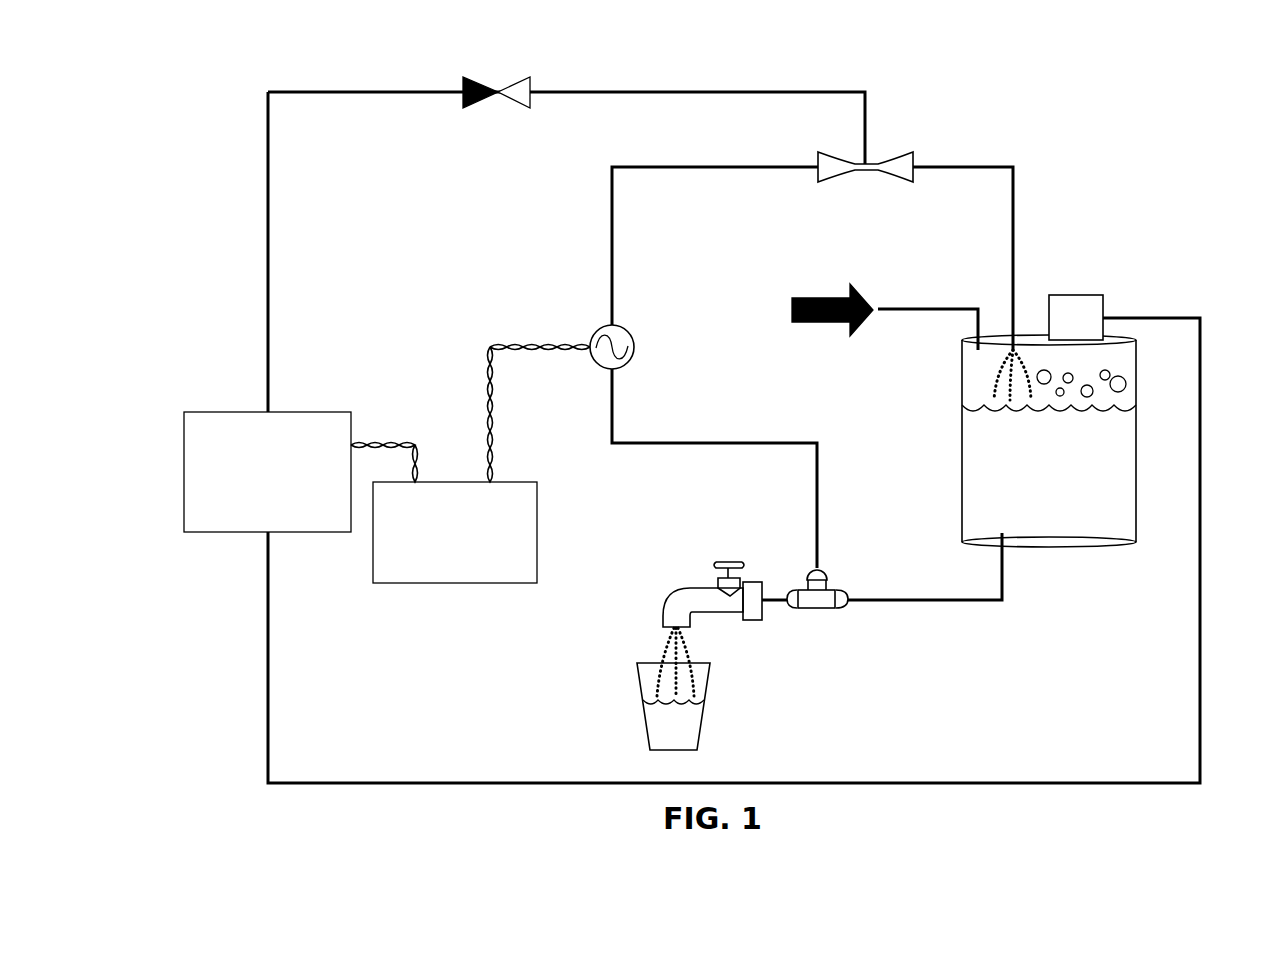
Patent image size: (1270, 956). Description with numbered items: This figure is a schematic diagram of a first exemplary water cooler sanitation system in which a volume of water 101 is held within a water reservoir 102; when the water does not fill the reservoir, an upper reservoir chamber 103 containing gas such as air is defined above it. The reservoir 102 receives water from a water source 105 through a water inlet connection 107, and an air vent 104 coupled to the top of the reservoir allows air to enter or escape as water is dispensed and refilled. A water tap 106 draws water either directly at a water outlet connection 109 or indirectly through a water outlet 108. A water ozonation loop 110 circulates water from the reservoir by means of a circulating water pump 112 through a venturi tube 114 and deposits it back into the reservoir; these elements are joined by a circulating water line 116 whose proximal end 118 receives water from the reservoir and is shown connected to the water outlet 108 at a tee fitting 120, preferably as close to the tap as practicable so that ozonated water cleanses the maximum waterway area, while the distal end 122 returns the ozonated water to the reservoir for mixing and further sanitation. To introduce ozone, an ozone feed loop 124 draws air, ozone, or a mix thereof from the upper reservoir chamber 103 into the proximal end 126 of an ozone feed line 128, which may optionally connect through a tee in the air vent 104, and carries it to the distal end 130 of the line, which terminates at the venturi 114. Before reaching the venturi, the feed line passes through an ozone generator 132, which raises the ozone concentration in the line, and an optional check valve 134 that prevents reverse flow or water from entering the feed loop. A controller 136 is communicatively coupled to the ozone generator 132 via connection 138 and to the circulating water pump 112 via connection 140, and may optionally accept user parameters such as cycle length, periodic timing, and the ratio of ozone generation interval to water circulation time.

The volume of water 101 is at (1123, 532).
The water reservoir 102 is at (946, 418).
The upper reservoir chamber 103 is at (1124, 368).
The air vent 104 is at (1061, 295).
The water source 105 is at (815, 298).
The water tap 106 is at (681, 588).
The water inlet connection 107 is at (942, 311).
The water outlet 108 is at (977, 599).
The water outlet connection 109 is at (1018, 554).
The water ozonation loop 110 is at (742, 414).
The circulating water pump 112 is at (628, 331).
The venturi tube 114 is at (823, 152).
The circulating water line 116 is at (677, 166).
The proximal end 118 is at (824, 560).
The tee fitting 120 is at (818, 608).
The distal end 122 is at (1004, 334).
The ozone feed loop 124 is at (230, 600).
The proximal end 126 is at (1124, 300).
The ozone feed line 128 is at (680, 92).
The distal end 130 is at (914, 126).
The ozone generator 132 is at (250, 412).
The check valve 134 is at (521, 80).
The controller 136 is at (422, 583).
The coupling to ozone generator 138 is at (364, 444).
The coupling to circulating water pump 140 is at (556, 345).